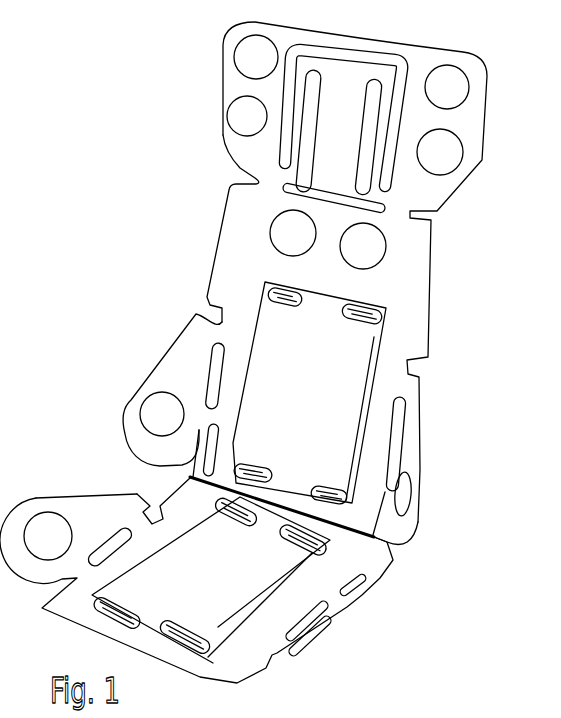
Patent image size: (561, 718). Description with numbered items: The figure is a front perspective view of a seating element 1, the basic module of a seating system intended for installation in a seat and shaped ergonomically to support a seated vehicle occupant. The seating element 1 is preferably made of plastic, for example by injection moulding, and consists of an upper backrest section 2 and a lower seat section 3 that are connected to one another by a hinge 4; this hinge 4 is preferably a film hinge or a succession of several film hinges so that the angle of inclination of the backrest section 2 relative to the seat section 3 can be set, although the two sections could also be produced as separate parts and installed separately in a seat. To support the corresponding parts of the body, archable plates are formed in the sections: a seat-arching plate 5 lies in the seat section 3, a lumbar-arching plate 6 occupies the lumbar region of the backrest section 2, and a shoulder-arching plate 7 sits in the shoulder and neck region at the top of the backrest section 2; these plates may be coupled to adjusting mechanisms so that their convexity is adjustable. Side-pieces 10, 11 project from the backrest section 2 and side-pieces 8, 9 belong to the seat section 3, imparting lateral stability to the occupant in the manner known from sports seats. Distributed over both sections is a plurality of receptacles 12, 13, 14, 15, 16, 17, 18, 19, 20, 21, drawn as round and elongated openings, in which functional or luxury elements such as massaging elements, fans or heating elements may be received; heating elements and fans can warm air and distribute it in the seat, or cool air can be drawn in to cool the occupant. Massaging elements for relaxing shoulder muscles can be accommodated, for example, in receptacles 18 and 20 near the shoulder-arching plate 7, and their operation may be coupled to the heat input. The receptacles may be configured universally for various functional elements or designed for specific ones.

The seating element 1 is at (100, 258).
The backrest section 2 is at (455, 323).
The seat section 3 is at (376, 647).
The hinge 4 is at (385, 558).
The seat-arching plate 5 is at (211, 579).
The lumbar-arching plate 6 is at (309, 393).
The shoulder-arching plate 7 is at (342, 131).
The side-piece 8 is at (360, 606).
The side-piece 9 is at (86, 497).
The side-piece 10 is at (421, 447).
The side-piece 11 is at (178, 340).
The receptacle 12 is at (50, 525).
The receptacle 13 is at (317, 644).
The receptacle 14 is at (418, 493).
The receptacle 15 is at (155, 414).
The receptacle 16 is at (375, 252).
The receptacle 17 is at (285, 238).
The receptacle 18 is at (453, 160).
The receptacle 19 is at (460, 93).
The receptacle 20 is at (238, 112).
The receptacle 21 is at (245, 53).